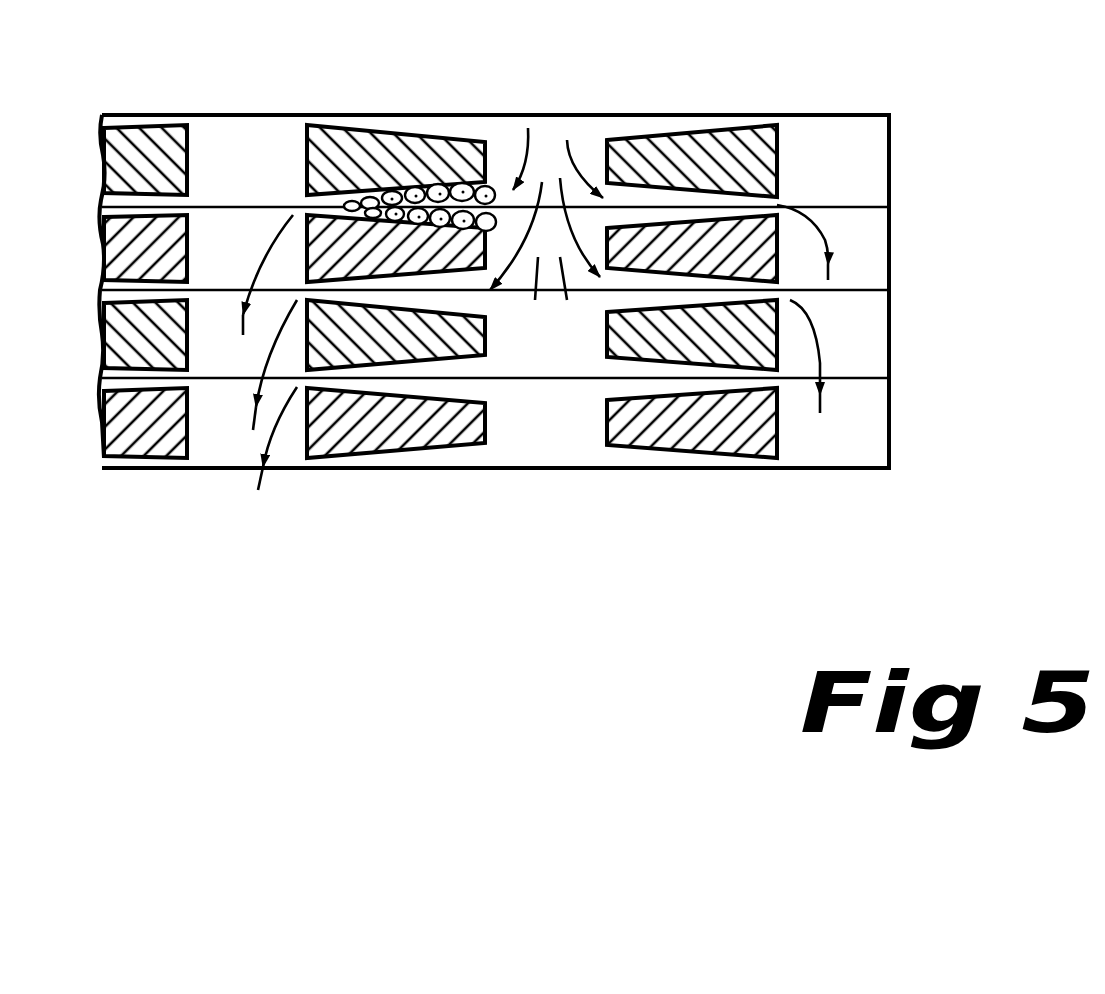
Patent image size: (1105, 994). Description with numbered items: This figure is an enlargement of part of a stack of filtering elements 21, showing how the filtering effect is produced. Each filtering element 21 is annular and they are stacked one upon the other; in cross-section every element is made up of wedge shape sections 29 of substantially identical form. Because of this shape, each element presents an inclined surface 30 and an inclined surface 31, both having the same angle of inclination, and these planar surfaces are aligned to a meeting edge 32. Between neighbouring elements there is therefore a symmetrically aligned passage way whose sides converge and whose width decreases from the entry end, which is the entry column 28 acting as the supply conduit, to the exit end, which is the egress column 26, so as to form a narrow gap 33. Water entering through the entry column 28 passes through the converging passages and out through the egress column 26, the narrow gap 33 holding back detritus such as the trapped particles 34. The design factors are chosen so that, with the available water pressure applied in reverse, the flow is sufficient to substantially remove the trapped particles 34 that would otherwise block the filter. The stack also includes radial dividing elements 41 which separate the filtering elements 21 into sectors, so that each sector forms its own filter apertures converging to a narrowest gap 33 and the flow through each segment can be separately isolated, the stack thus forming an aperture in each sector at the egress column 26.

The filtering element 21 is at (880, 237).
The egress column 26 is at (240, 127).
The entry column 28 is at (575, 130).
The wedge shape section 29 is at (380, 455).
The inclined surface 30 is at (665, 175).
The inclined surface 31 is at (717, 200).
The meeting edge 32 is at (847, 200).
The narrow gap 33 is at (307, 210).
The trapped particles 34 is at (428, 190).
The radial dividing element 41 is at (627, 113).